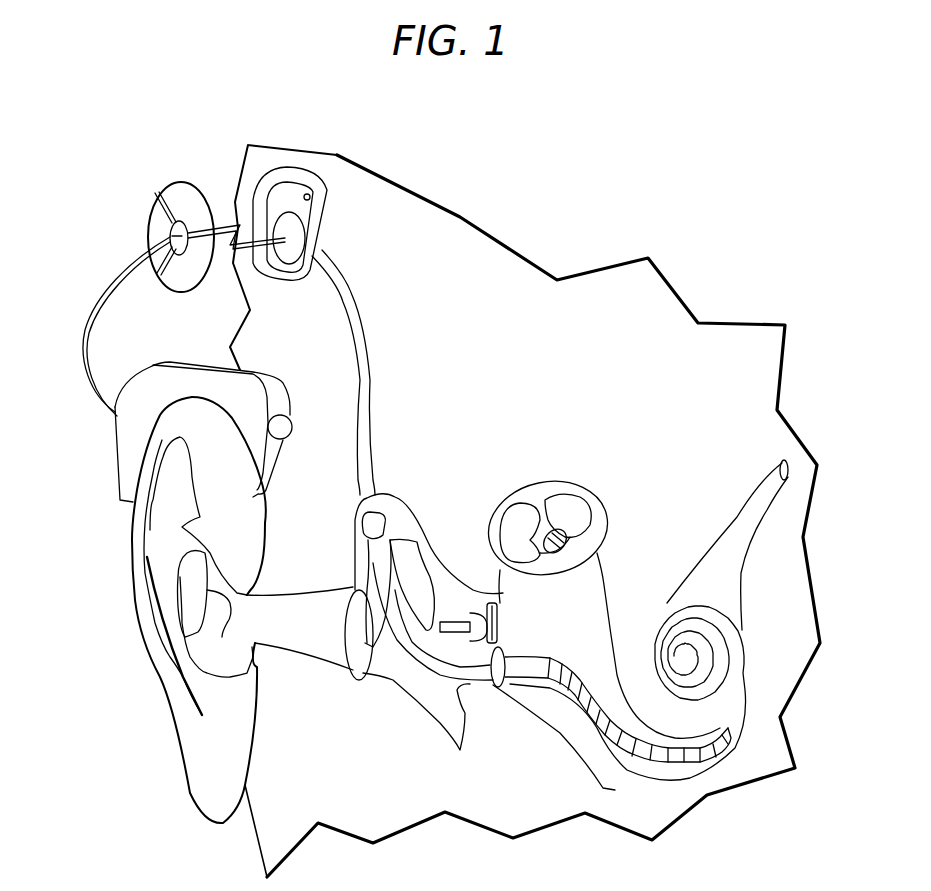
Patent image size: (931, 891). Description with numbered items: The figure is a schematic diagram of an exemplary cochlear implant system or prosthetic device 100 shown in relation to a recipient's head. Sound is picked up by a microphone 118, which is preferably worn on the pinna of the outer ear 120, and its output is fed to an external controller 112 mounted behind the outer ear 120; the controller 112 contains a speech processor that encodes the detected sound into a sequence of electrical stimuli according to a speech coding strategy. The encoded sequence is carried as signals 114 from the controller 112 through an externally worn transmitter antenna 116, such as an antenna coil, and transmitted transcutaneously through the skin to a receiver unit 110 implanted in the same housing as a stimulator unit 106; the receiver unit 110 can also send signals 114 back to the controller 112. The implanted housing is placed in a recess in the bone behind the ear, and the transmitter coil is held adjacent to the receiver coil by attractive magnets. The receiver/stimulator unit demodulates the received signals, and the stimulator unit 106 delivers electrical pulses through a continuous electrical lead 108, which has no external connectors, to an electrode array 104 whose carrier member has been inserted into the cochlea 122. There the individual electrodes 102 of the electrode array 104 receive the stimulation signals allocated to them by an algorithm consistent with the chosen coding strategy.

The cochlear implant system 100 is at (95, 163).
The electrodes 102 is at (730, 750).
The electrode array 104 is at (602, 748).
The stimulator unit 106 is at (327, 200).
The electrical lead 108 is at (372, 387).
The receiver unit 110 is at (313, 240).
The controller 112 is at (125, 458).
The signals 114 is at (228, 248).
The transmitter antenna 116 is at (170, 235).
The microphone 118 is at (282, 433).
The outer ear 120 is at (200, 755).
The cochlea 122 is at (600, 573).